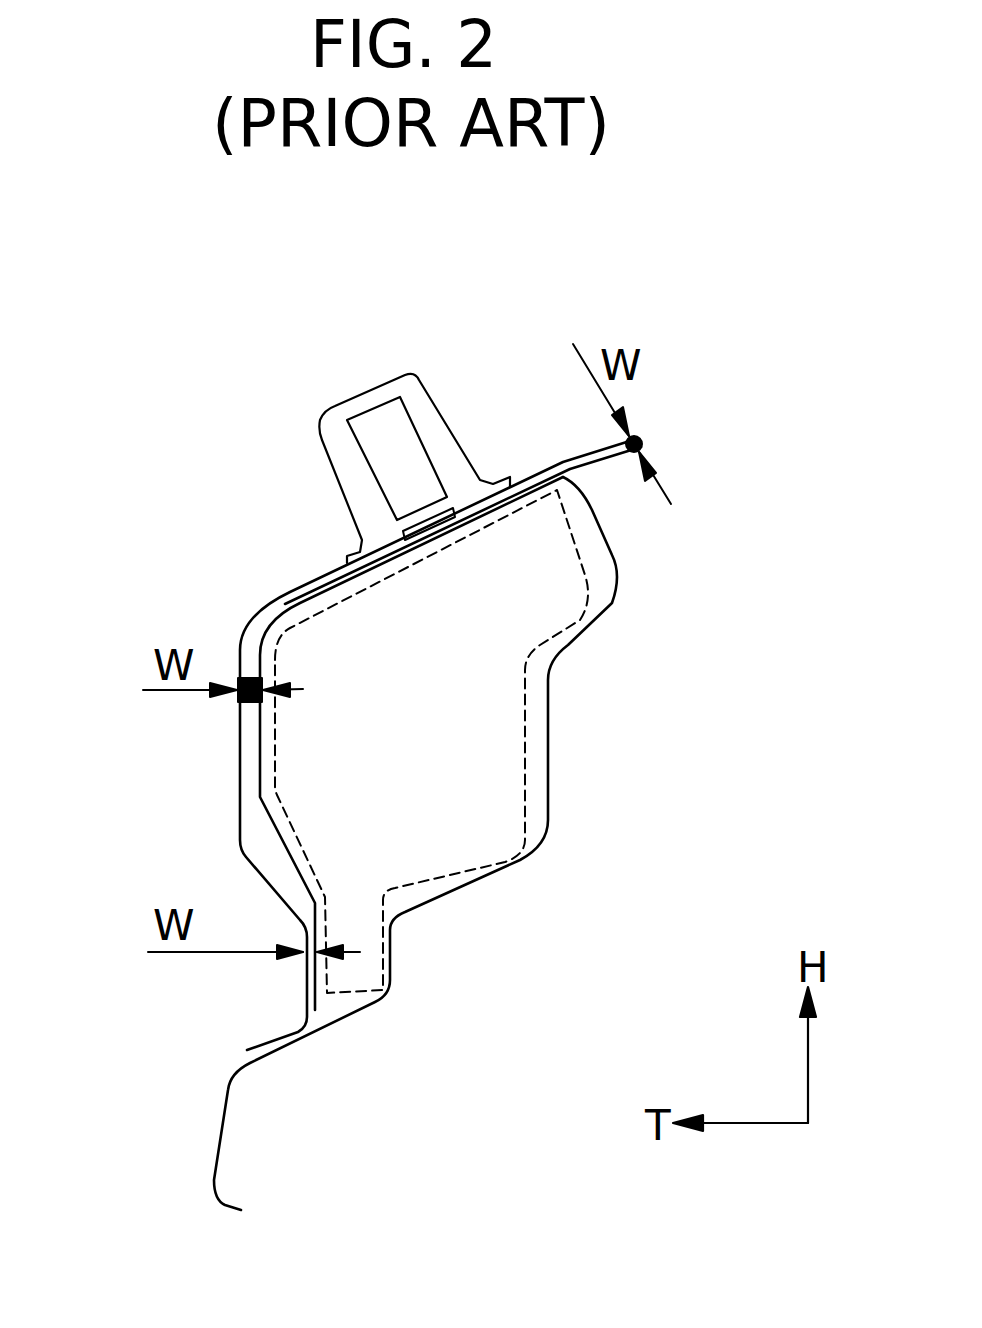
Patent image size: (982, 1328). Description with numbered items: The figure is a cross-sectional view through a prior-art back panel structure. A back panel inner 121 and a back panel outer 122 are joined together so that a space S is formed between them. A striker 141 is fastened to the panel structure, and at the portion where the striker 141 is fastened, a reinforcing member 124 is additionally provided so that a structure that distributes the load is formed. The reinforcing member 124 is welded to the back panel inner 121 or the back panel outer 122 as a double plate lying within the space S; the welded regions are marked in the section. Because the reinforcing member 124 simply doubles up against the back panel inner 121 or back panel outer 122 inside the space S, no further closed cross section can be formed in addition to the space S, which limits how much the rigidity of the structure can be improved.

The back panel inner 121 is at (125, 770).
The back panel outer 122 is at (550, 687).
The reinforcing member 124 is at (274, 822).
The striker 141 is at (340, 408).
The space S is at (483, 857).